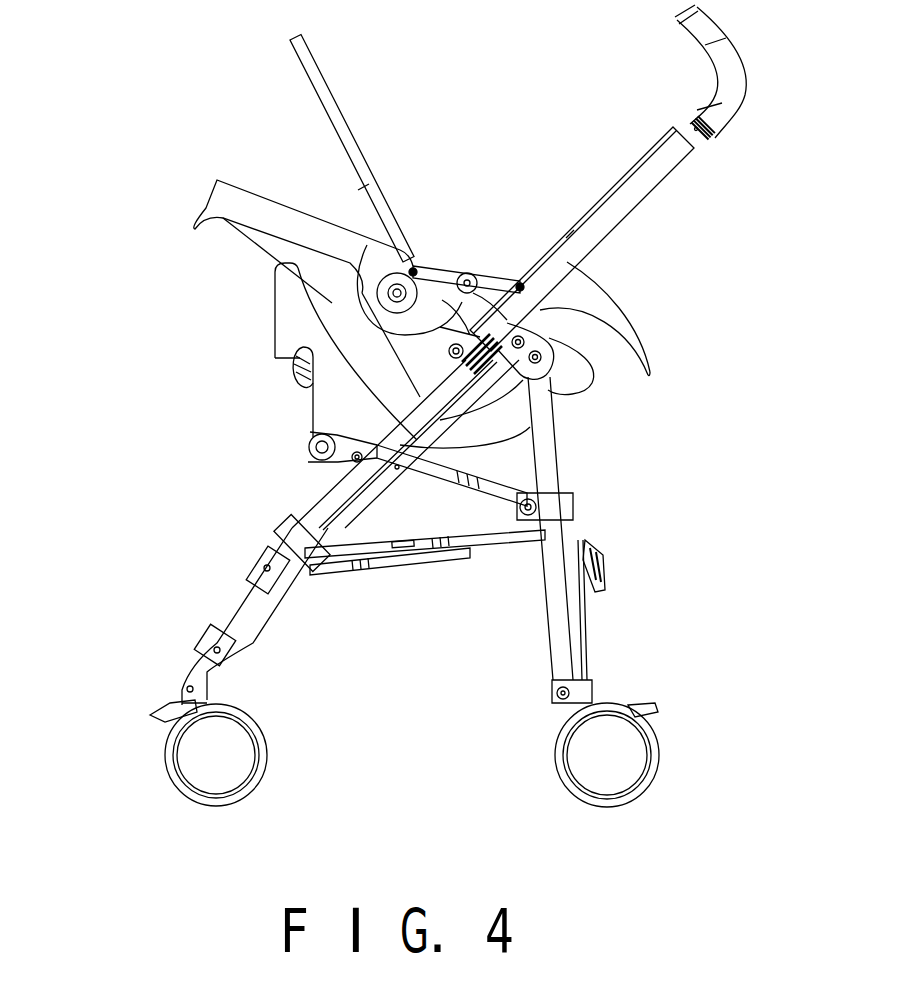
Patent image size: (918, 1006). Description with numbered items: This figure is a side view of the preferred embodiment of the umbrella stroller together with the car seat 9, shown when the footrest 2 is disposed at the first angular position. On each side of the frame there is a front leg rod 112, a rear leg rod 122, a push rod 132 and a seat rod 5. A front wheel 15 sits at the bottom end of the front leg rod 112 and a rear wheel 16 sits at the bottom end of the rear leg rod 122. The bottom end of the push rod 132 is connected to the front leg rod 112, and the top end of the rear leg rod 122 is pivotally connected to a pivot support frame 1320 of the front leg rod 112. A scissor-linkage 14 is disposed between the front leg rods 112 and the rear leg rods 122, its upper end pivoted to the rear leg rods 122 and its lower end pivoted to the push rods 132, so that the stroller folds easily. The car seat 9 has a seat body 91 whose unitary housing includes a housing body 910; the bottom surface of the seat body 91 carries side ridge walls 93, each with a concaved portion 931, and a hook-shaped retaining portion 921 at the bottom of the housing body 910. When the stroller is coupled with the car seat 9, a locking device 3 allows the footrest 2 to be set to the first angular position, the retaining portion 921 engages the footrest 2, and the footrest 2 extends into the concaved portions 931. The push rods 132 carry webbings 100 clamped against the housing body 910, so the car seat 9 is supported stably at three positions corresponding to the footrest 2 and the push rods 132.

The car seat 9 is at (232, 145).
The housing body 910 is at (310, 267).
The concaved portion 931 is at (362, 293).
The seat body 91 is at (250, 242).
The side ridge wall 93 is at (287, 313).
The footrest 2 is at (287, 364).
The retaining portion 921 is at (303, 373).
The locking device 3 is at (293, 461).
The webbing 100 is at (497, 293).
The push rod 132 is at (623, 207).
The pivot support frame 1320 is at (533, 340).
The seat rod 5 is at (483, 476).
The rear leg rod 122 is at (548, 477).
The front leg rod 112 is at (358, 507).
The scissor-linkage 14 is at (495, 540).
The front wheel 15 is at (210, 763).
The rear wheel 16 is at (592, 767).